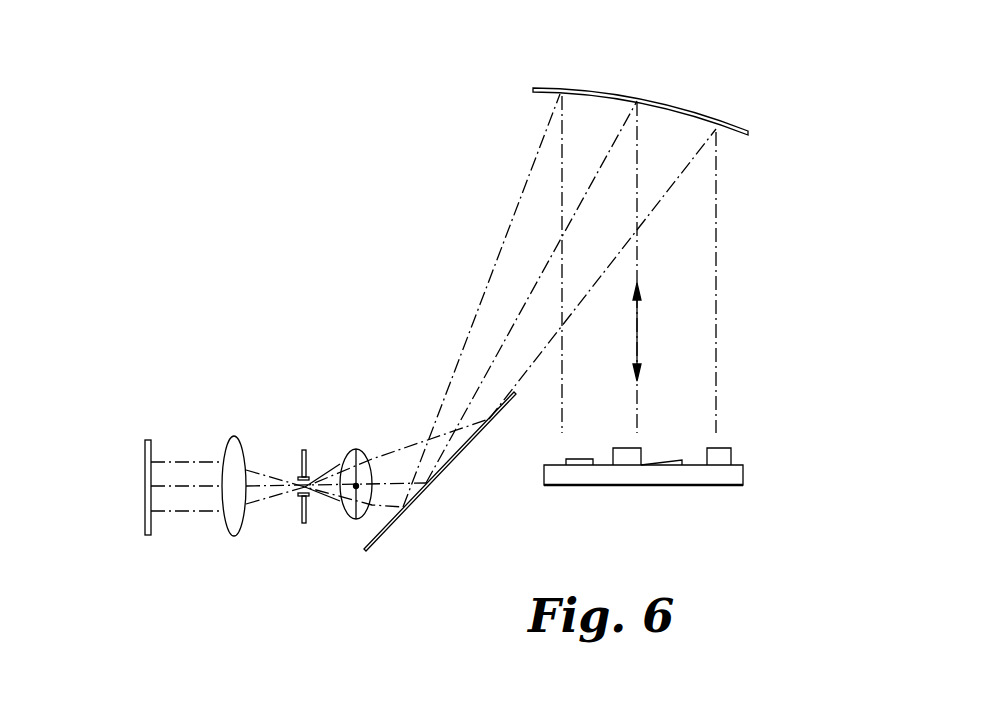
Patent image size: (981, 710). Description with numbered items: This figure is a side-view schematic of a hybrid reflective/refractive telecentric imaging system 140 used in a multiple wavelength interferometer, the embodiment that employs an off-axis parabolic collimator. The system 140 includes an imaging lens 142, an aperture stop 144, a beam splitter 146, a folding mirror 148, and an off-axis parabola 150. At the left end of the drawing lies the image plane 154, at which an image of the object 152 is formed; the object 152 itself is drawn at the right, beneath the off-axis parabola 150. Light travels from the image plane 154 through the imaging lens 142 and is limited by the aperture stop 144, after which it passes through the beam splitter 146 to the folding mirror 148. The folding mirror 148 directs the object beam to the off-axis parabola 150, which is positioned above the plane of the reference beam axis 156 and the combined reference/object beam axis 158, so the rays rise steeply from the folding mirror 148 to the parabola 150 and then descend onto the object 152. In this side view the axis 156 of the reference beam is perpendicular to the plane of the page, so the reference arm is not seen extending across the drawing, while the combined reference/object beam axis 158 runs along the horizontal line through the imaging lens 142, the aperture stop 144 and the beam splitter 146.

The system 140 is at (268, 205).
The imaging lens 142 is at (235, 536).
The aperture stop 144 is at (310, 517).
The beam splitter 146 is at (368, 460).
The folding mirror 148 is at (390, 530).
The off-axis parabola 150 is at (630, 93).
The object 152 is at (643, 486).
The image plane 154 is at (143, 457).
The reference beam axis 156 is at (342, 470).
The combined reference/object beam axis 158 is at (172, 487).